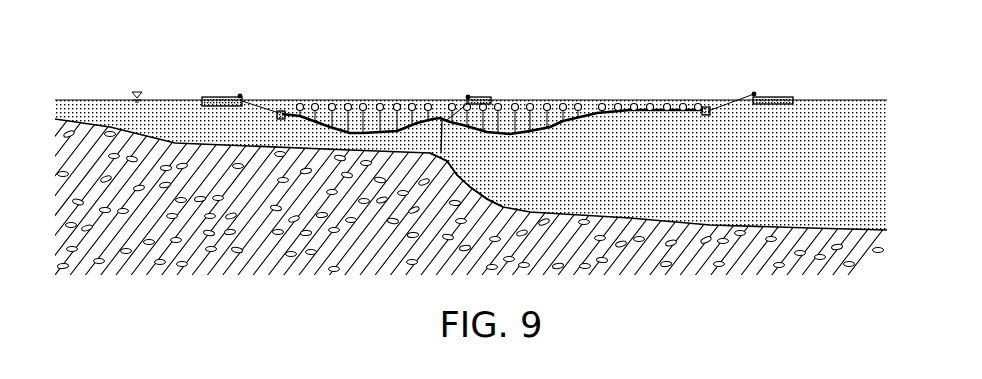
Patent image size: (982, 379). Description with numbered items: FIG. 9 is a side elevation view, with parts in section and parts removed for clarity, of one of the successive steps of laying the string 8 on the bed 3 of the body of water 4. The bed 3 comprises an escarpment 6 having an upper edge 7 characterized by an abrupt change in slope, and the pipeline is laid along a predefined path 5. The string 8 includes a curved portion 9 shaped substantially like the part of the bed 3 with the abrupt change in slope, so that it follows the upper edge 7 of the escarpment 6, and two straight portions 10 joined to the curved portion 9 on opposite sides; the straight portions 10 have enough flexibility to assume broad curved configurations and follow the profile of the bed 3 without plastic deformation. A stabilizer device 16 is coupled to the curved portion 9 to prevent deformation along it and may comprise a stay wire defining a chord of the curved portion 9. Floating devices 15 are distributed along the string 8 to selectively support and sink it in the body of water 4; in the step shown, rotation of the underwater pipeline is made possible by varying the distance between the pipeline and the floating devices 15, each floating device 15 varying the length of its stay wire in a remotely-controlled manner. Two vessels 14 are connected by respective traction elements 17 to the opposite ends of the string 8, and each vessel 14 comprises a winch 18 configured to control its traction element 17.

The bed 3 is at (852, 226).
The body of water 4 is at (822, 112).
The predefined path 5 is at (816, 225).
The escarpment 6 is at (490, 185).
The upper edge 7 is at (452, 153).
The string 8 is at (588, 128).
The curved portion 9 is at (437, 117).
The straight portions 10 is at (342, 120).
The vessels 14 is at (210, 95).
The floating devices 15 is at (363, 103).
The stabilizer device 16 is at (441, 155).
The traction elements 17 is at (262, 105).
The winches 18 is at (240, 94).